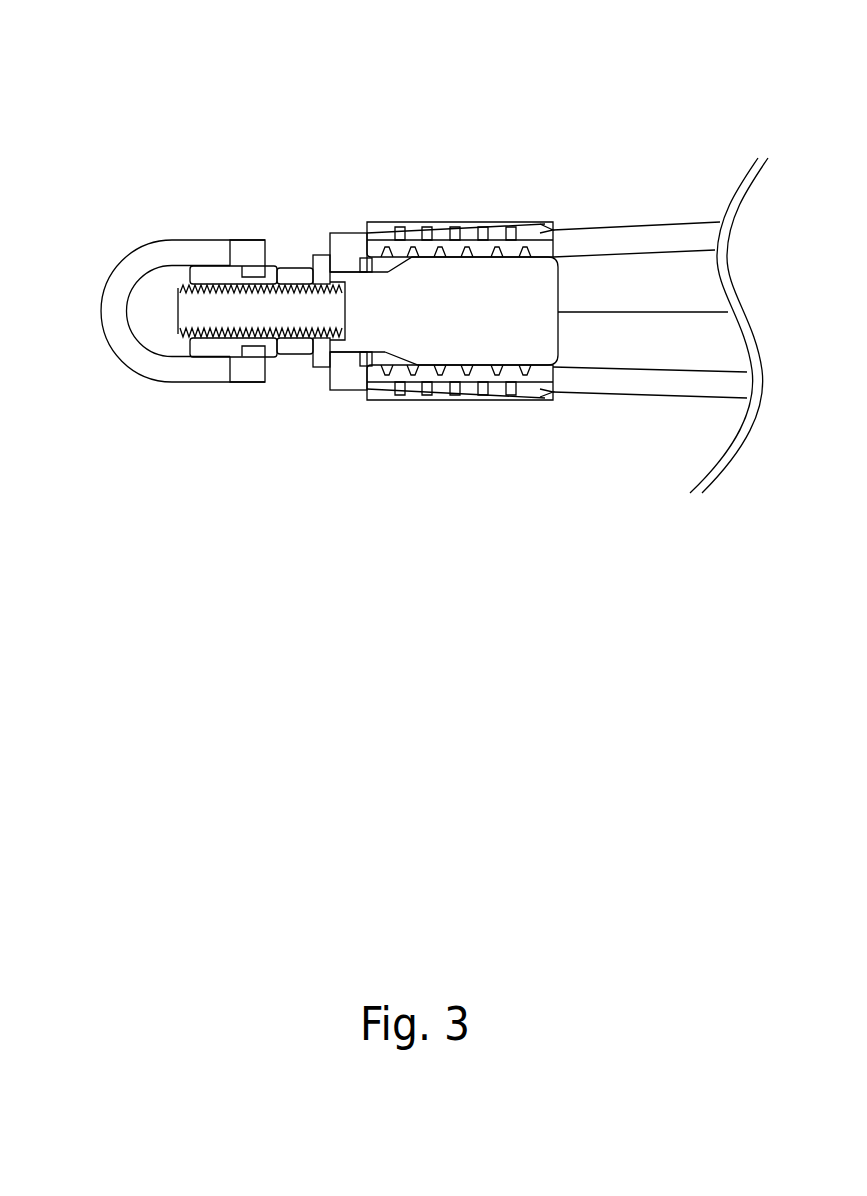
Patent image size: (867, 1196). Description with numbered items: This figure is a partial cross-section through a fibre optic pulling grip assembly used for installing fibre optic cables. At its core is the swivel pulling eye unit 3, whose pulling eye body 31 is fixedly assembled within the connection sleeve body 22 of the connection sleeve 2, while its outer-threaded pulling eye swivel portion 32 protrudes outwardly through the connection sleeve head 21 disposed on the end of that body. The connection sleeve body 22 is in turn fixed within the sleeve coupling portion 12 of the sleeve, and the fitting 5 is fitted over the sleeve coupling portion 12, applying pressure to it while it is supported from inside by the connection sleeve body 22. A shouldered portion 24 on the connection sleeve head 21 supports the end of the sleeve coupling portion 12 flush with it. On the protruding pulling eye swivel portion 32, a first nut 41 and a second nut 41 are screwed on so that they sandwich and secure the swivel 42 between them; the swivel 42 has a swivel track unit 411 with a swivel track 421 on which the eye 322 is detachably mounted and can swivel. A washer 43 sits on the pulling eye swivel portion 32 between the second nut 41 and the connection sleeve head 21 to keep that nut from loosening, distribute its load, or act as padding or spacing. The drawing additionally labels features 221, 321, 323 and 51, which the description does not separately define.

The connection sleeve 2 is at (394, 245).
The connection sleeve head 21 is at (340, 375).
The connection sleeve body 22 is at (460, 176).
The sleeve engaging portion 221 is at (412, 253).
The shouldered portion 24 is at (369, 260).
The swivel pulling eye unit 3 is at (508, 399).
The pulling eye body 31 is at (498, 315).
The pulling eye swivel portion 32 is at (282, 440).
The external thread 321 is at (260, 308).
The eye 322 is at (148, 362).
The rod end 323 is at (177, 312).
The nut 41 is at (223, 348).
The swivel track unit 411 is at (233, 270).
The swivel 42 is at (237, 211).
The swivel track 421 is at (263, 275).
The washer 43 is at (313, 255).
The fitting 5 is at (537, 232).
The lower sleeve 51 is at (380, 395).
The sleeve coupling portion 12 is at (467, 243).